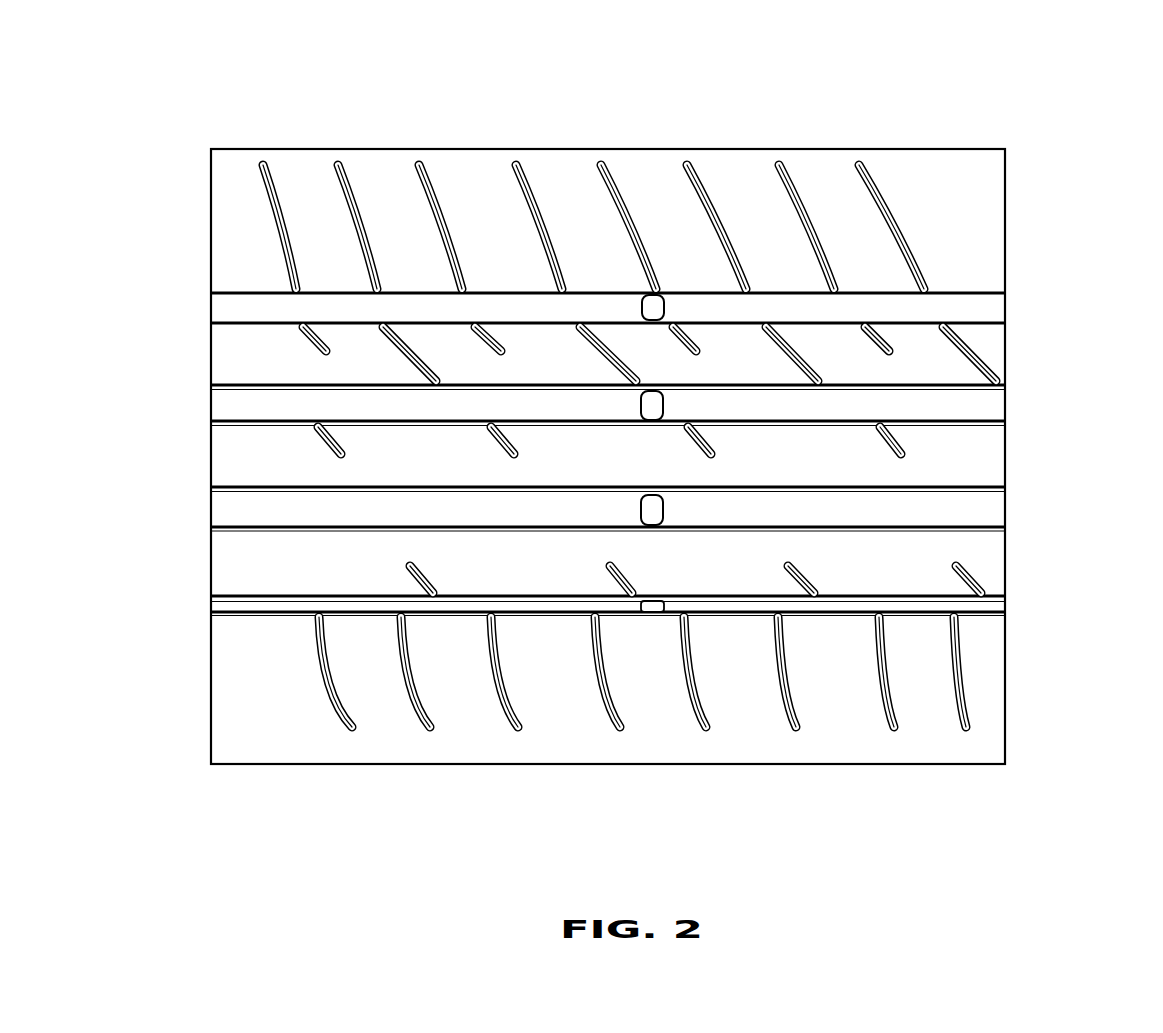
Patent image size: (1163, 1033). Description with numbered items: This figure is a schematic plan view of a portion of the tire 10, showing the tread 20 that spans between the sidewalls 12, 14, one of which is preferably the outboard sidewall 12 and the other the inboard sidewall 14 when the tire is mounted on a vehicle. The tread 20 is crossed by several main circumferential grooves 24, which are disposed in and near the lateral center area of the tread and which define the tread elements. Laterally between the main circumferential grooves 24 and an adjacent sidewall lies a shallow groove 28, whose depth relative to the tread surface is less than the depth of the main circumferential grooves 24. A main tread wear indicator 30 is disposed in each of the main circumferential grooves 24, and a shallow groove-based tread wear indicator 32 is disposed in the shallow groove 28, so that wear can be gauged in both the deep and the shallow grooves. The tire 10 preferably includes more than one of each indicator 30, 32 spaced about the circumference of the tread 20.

The tire 10 is at (236, 109).
The sidewall 12 is at (290, 765).
The sidewall 14 is at (388, 148).
The tread 20 is at (984, 251).
The main circumferential groove 24 is at (598, 312).
The shallow groove 28 is at (387, 607).
The main tread wear indicator 30 is at (655, 306).
The shallow groove-based tread wear indicator 32 is at (653, 612).